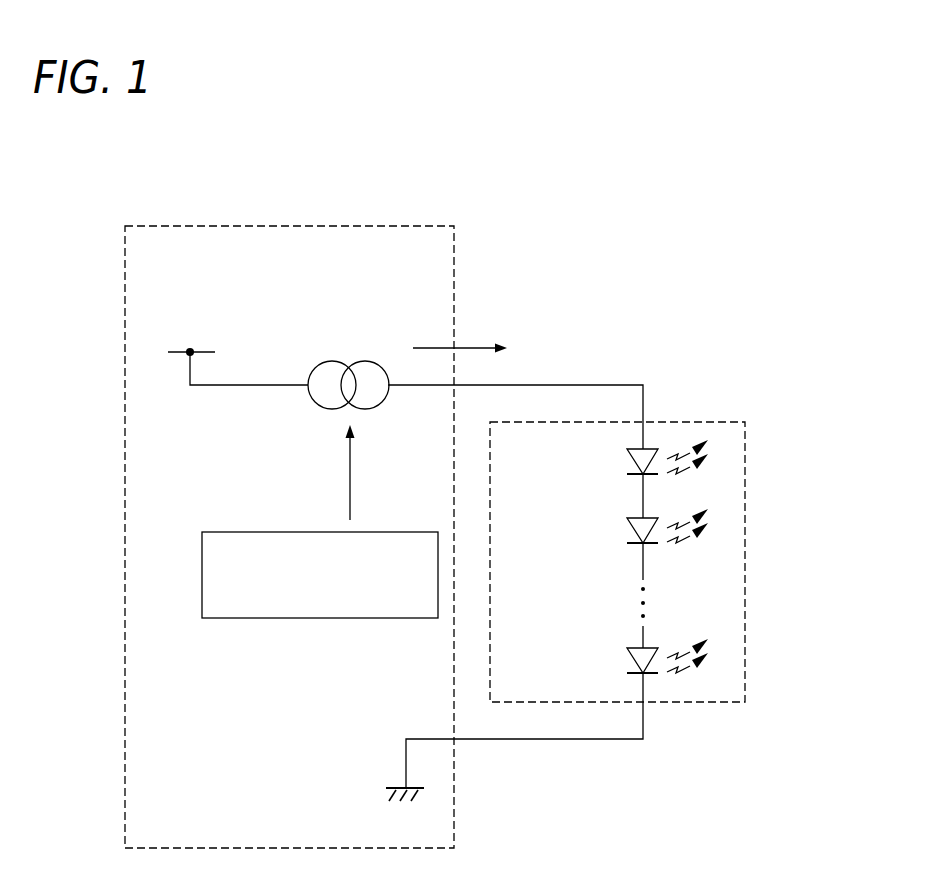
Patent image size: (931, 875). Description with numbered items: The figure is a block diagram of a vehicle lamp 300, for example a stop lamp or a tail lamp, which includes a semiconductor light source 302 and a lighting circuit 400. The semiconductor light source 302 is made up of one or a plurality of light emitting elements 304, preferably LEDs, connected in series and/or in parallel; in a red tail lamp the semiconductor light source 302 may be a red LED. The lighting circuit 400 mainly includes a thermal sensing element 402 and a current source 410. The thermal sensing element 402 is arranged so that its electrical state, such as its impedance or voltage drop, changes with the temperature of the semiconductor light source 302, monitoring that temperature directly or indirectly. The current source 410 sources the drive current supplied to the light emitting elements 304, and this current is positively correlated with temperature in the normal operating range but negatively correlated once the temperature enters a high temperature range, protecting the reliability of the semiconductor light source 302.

The vehicle lamp 300 is at (781, 220).
The lighting circuit 400 is at (330, 225).
The current source 410 is at (335, 361).
The thermal sensing element 402 is at (325, 618).
The semiconductor light source 302 is at (745, 447).
The light emitting element 304 is at (627, 462).